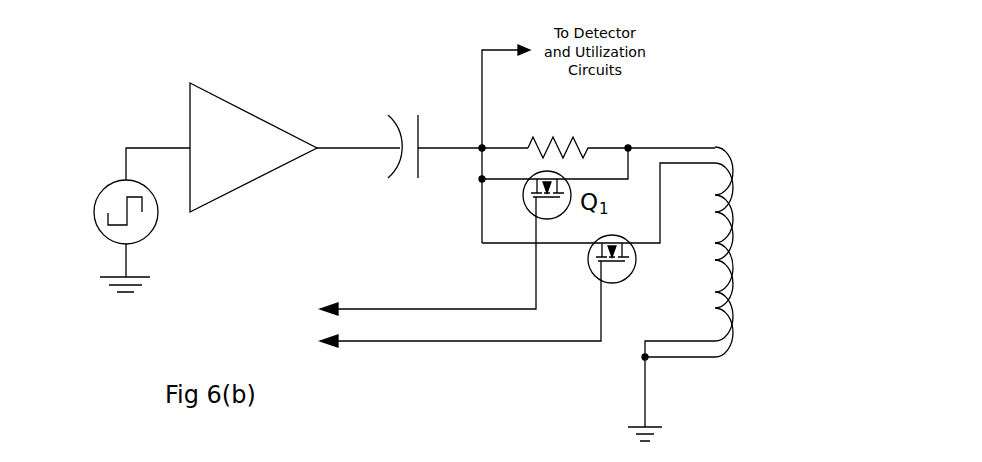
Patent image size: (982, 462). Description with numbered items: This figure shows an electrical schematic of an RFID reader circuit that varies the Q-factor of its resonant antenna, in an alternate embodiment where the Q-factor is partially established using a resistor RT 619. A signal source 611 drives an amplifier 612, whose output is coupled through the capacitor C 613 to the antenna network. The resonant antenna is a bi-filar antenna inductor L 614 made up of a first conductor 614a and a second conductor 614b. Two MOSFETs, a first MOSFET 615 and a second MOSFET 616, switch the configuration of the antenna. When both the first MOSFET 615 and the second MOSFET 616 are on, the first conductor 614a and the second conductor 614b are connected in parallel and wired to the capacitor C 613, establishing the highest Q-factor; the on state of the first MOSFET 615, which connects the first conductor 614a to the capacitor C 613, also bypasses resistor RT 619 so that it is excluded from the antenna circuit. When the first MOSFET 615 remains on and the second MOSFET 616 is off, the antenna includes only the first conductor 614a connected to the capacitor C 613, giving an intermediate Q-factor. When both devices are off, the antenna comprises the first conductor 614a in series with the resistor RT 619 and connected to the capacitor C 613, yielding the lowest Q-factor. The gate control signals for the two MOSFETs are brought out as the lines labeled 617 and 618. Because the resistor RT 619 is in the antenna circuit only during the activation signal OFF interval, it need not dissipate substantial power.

The pulse signal source 611 is at (93, 187).
The amplifier 612 is at (255, 100).
The capacitor C 613 is at (402, 100).
The bi-filar antenna inductor L 614 is at (735, 216).
The first conductor 614a is at (740, 198).
The second conductor 614b is at (740, 245).
The MOSFET Q1 615 is at (595, 168).
The MOSFET Q2 616 is at (583, 270).
The hold control signal qH 617 is at (305, 300).
The flip control signal qF 618 is at (295, 352).
The resistor RT 619 is at (555, 127).